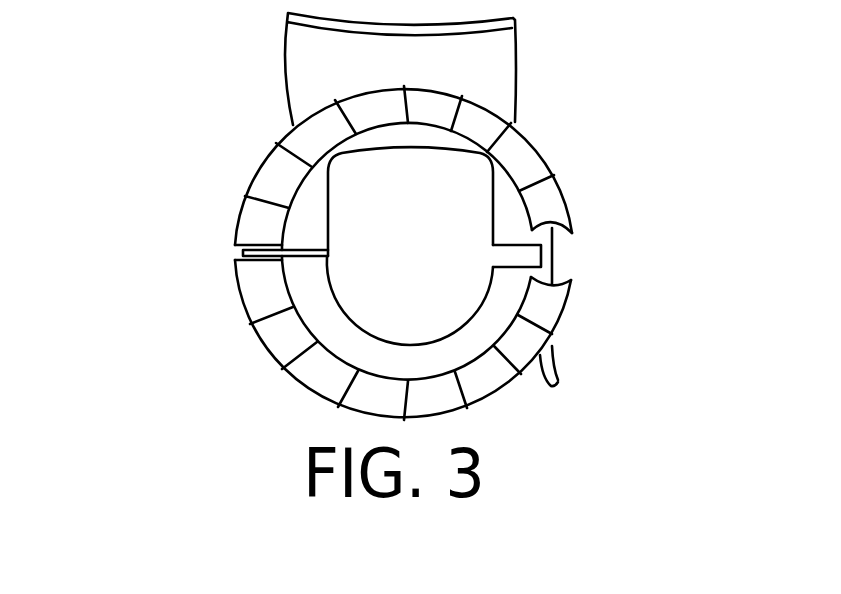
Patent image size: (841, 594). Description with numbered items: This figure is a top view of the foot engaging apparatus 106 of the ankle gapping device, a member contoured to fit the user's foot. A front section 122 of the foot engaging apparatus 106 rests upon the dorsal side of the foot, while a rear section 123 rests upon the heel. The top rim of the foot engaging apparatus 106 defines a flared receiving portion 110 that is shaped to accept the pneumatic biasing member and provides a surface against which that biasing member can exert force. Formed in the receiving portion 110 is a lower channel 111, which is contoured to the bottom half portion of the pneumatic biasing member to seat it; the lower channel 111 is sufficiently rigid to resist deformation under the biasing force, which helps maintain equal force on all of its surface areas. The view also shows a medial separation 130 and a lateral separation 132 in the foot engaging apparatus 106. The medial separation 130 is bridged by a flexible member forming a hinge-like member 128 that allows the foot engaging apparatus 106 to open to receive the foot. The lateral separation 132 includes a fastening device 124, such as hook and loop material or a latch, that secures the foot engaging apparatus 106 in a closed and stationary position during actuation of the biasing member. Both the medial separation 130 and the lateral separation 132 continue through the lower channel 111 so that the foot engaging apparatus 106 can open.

The foot engaging apparatus 106 is at (185, 110).
The front section 122 is at (517, 68).
The flared receiving portion 110 is at (540, 143).
The lower channel 111 is at (540, 195).
The hinge-like member 128 is at (243, 253).
The medial separation 130 is at (328, 253).
The lateral separation 132 is at (487, 256).
The rear section 123 is at (367, 333).
The fastening device 124 is at (558, 378).